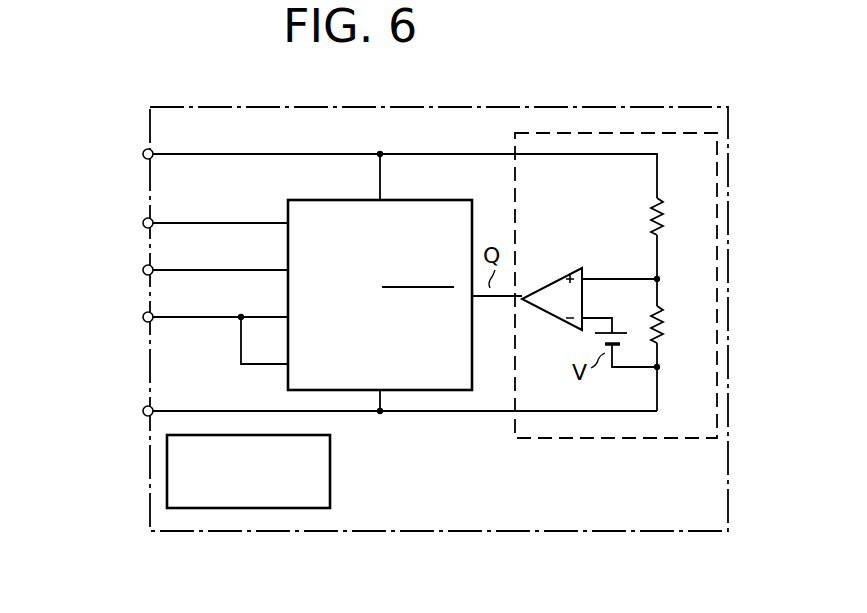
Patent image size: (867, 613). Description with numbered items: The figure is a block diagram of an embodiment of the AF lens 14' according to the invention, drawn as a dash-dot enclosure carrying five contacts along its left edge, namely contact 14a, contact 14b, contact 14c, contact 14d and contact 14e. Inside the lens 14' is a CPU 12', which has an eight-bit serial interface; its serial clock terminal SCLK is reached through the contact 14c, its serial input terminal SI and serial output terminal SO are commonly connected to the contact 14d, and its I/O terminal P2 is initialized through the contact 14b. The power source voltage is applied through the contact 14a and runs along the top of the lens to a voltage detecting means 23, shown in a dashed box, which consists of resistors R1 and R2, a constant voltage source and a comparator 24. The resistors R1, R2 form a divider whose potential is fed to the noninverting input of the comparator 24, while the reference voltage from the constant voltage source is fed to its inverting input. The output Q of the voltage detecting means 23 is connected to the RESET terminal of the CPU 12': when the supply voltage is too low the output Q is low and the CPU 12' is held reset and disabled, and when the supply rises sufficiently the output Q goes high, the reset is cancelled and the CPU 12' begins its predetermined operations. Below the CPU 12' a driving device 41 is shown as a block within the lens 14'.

The AF lens 14' is at (439, 360).
The contact 14a is at (143, 151).
The contact 14b is at (142, 222).
The contact 14c is at (142, 268).
The contact 14d is at (143, 315).
The contact 14e is at (143, 410).
The CPU 12' is at (349, 283).
The voltage detecting means 23 is at (566, 440).
The comparator 24 is at (568, 268).
The driving device 41 is at (332, 455).
The resistor R1 is at (651, 216).
The resistor R2 is at (665, 332).